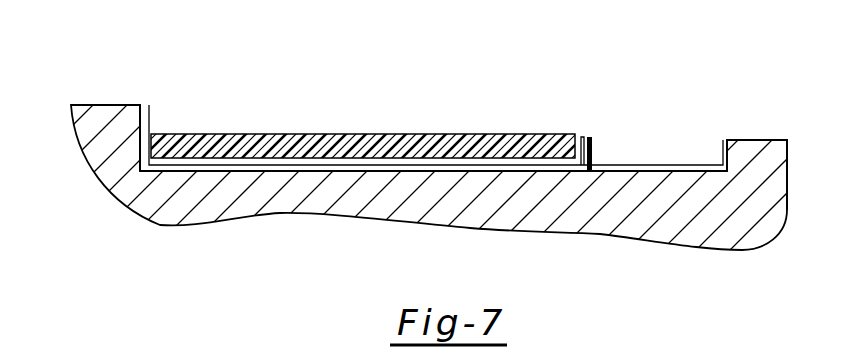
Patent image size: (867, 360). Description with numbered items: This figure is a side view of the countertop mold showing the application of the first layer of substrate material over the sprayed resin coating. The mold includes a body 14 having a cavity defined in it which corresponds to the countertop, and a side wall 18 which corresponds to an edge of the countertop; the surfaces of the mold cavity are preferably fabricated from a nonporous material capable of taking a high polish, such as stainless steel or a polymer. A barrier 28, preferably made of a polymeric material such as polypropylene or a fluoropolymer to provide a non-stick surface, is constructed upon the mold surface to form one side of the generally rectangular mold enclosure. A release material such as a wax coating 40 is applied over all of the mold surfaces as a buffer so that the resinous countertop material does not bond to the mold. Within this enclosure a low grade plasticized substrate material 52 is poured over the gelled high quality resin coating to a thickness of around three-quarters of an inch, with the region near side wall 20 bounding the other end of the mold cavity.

The body 14 is at (270, 219).
The side wall 18 is at (113, 105).
The right side wall 20 is at (755, 140).
The barrier 28 is at (586, 135).
The wax coating 40 is at (581, 135).
The plasticized substrate material 52 is at (330, 134).